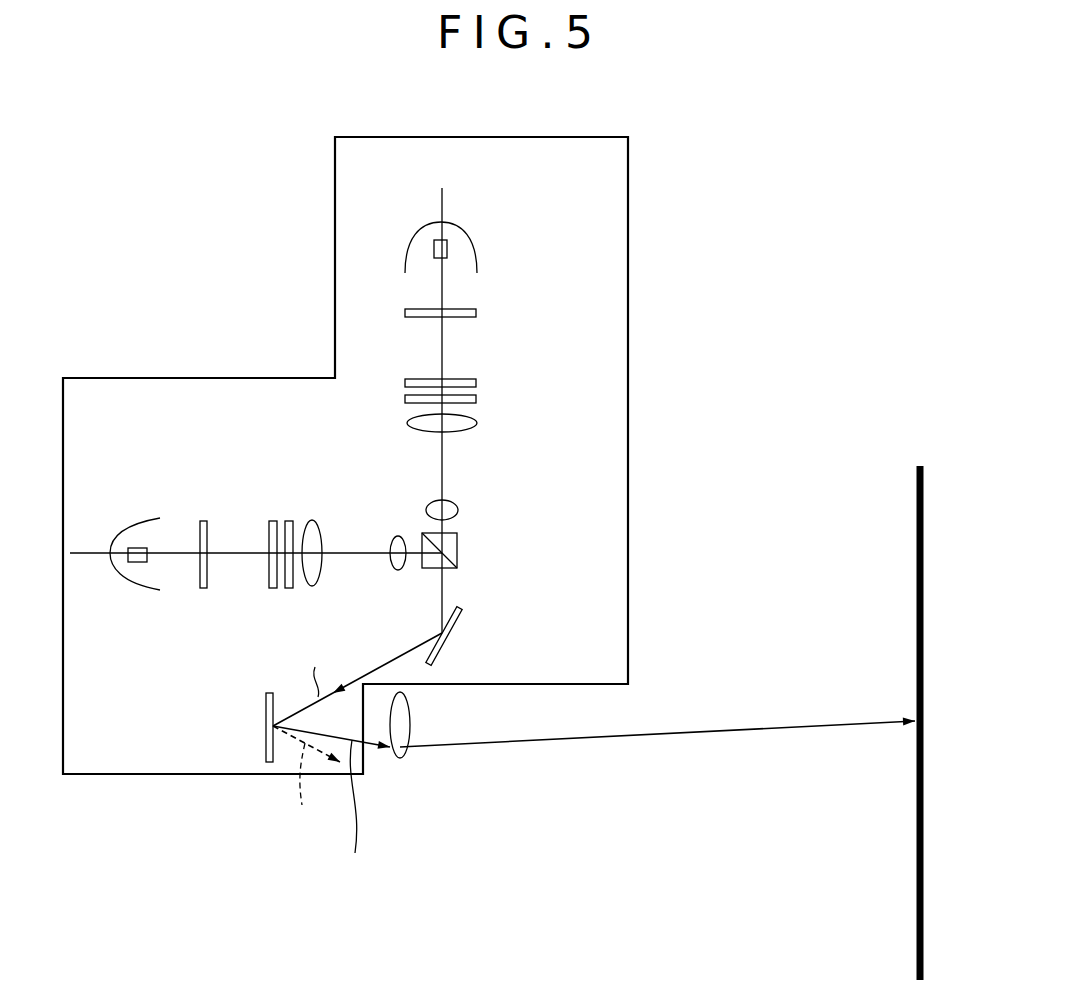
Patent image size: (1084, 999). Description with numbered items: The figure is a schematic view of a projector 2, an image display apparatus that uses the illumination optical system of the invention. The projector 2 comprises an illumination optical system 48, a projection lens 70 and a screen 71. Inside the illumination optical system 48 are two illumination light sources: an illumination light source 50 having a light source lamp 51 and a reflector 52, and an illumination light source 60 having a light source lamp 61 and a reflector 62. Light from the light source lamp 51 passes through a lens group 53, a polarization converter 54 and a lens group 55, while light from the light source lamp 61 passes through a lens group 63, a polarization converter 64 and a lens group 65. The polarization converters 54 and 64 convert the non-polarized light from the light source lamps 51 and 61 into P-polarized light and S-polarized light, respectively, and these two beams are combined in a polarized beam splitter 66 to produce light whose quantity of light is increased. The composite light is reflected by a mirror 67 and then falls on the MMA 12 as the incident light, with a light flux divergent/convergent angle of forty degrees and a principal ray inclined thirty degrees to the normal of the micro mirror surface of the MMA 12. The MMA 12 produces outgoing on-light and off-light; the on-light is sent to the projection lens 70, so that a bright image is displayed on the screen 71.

The projector 2 is at (285, 247).
The MMA 12 is at (266, 715).
The illumination optical system 48 is at (628, 155).
The illumination light source 50 is at (507, 218).
The light source lamp 51 is at (447, 249).
The reflector 52 is at (476, 255).
The lens group 53 is at (487, 305).
The polarization converter 54 is at (476, 399).
The lens group 55 is at (482, 413).
The illumination light source 60 is at (120, 499).
The light source lamp 61 is at (132, 548).
The reflector 62 is at (153, 517).
The lens group 63 is at (200, 512).
The polarization converter 64 is at (290, 518).
The lens group 65 is at (410, 512).
The polarized beam splitter 66 is at (457, 550).
The mirror 67 is at (452, 634).
The projection lens 70 is at (398, 760).
The screen 71 is at (925, 470).